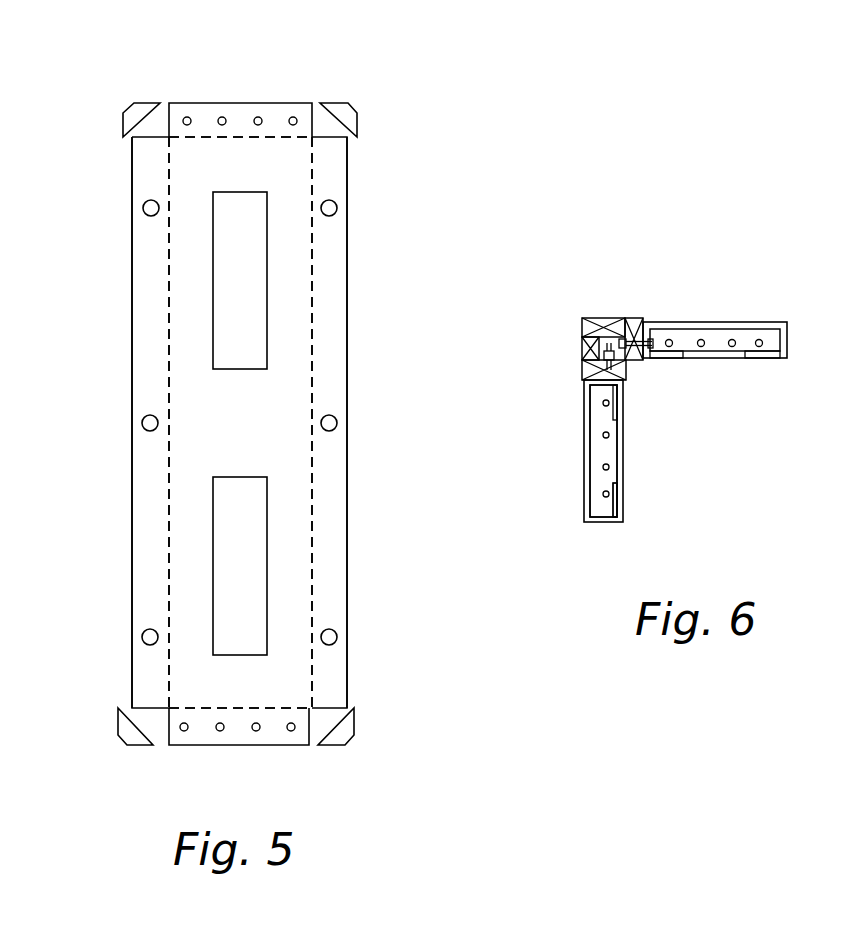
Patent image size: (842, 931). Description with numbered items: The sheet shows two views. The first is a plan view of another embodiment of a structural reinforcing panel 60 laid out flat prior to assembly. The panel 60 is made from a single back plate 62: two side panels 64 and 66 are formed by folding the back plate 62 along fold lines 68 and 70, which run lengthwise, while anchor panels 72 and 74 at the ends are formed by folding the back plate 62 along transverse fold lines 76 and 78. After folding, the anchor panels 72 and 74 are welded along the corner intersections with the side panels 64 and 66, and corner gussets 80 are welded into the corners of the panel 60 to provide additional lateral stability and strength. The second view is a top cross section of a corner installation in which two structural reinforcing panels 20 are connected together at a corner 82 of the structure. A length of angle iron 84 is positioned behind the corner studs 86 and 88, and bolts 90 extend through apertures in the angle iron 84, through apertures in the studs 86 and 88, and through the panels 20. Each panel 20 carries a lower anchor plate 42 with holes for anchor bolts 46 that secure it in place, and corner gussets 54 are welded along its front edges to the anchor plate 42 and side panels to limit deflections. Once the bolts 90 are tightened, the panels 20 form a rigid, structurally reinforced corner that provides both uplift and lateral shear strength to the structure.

In FIG. 5, the structural reinforcing panel 60 is at (280, 52).
In FIG. 5, the back plate 62 is at (287, 502).
In FIG. 5, the side panel 64 is at (345, 183).
In FIG. 5, the side panel 66 is at (132, 375).
In FIG. 5, the fold line 68 is at (312, 275).
In FIG. 5, the fold line 70 is at (169, 582).
In FIG. 5, the anchor panel 72 is at (208, 103).
In FIG. 5, the anchor panel 74 is at (277, 745).
In FIG. 5, the fold line 76 is at (208, 140).
In FIG. 5, the fold line 78 is at (268, 708).
In FIG. 5, the corner gusset 80 is at (350, 122).
In FIG. 6, the corner 82 is at (592, 288).
In FIG. 6, the angle iron 84 is at (623, 362).
In FIG. 6, the corner stud 86 is at (633, 318).
In FIG. 6, the corner stud 88 is at (582, 366).
In FIG. 6, the bolt 90 is at (607, 375).
In FIG. 6, the structural reinforcing panel 20 is at (733, 322).
In FIG. 6, the lower anchor plate 42 is at (615, 468).
In FIG. 6, the anchor bolt 46 is at (609, 435).
In FIG. 6, the corner gusset 54 is at (617, 498).